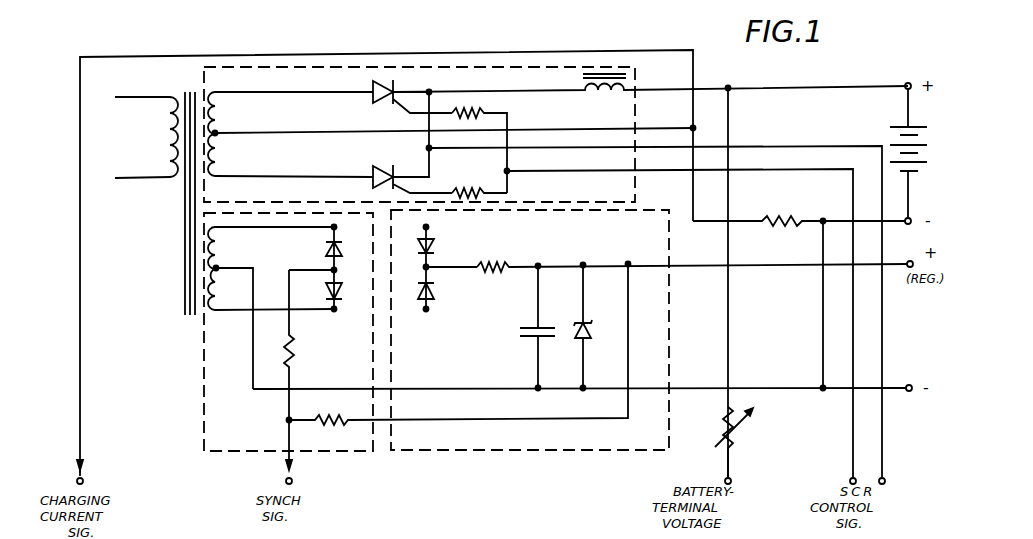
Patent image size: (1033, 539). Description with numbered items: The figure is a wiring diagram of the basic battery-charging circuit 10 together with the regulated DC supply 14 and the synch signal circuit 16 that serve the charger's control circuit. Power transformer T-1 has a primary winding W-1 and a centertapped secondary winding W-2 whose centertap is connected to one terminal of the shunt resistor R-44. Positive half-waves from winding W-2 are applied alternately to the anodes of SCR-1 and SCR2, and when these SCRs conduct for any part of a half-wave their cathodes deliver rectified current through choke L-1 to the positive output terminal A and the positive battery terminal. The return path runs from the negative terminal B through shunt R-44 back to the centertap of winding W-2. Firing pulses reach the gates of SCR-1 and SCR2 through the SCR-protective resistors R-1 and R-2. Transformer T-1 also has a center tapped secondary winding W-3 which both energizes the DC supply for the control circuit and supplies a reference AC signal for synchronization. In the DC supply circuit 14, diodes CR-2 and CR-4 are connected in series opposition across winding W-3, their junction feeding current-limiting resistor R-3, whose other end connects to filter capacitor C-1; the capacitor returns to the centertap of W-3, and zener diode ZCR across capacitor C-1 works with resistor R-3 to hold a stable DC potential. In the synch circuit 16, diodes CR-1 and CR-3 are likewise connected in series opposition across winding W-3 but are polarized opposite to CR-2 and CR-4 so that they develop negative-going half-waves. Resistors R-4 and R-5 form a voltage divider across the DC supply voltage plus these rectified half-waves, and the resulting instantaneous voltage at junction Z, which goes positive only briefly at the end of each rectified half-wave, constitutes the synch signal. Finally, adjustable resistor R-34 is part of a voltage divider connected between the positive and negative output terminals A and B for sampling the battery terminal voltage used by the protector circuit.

The basic battery-charging circuit 10 is at (636, 127).
The synch signal circuit 16 is at (250, 452).
The regulated DC supply circuit 14 is at (566, 451).
The power transformer T-1 is at (178, 281).
The primary winding W-1 is at (168, 137).
The centertapped secondary winding W-2 is at (219, 126).
The center tapped secondary winding W-3 is at (219, 258).
The silicon controlled rectifier SCR2 is at (376, 108).
The silicon controlled rectifier SCR-1 is at (368, 170).
The SCR-protective resistor R-1 is at (481, 109).
The SCR-protective resistor R-2 is at (484, 166).
The choke L-1 is at (577, 81).
The positive output terminal A is at (905, 81).
The negative output terminal B is at (906, 225).
The shunt resistor R-44 is at (798, 217).
The current-limiting resistor R-3 is at (483, 265).
The diode CR-1 is at (326, 249).
The diode CR-2 is at (430, 247).
The diode CR-3 is at (326, 295).
The diode CR-4 is at (434, 291).
The resistor R-4 is at (299, 357).
The junction Z is at (288, 421).
The resistor R-5 is at (350, 428).
The filter capacitor C-1 is at (520, 333).
The zener diode ZCR is at (622, 303).
The adjustable resistor R-34 is at (716, 442).